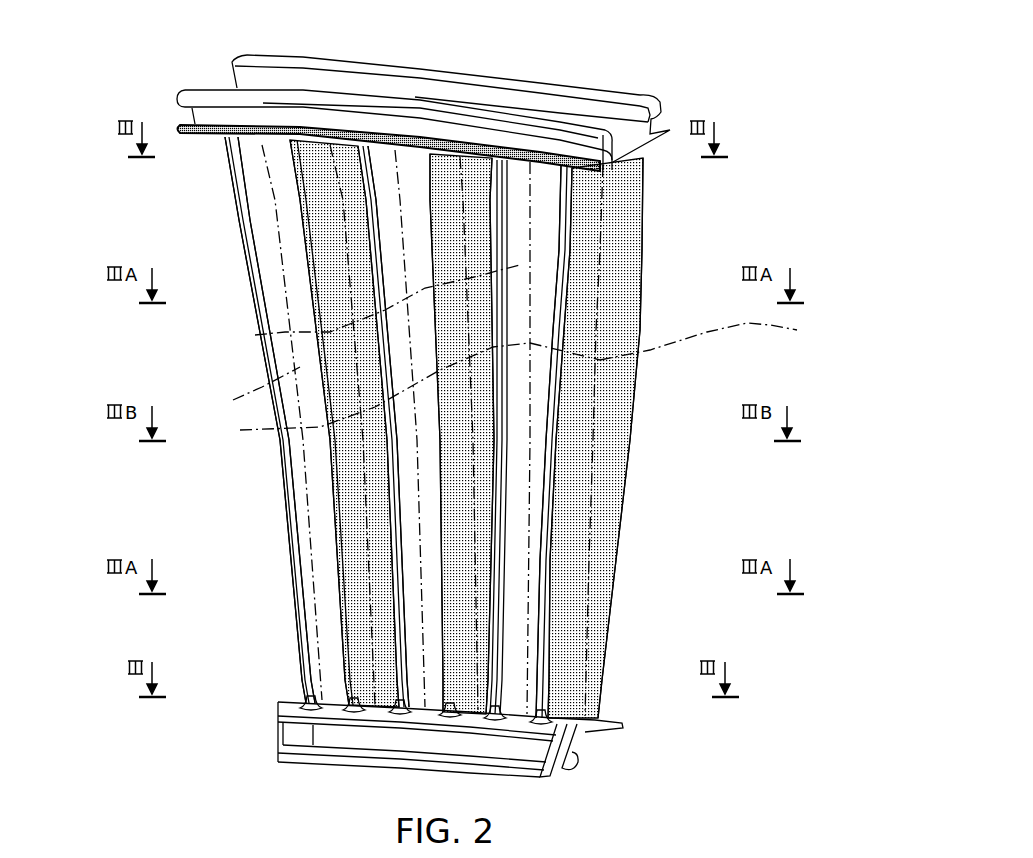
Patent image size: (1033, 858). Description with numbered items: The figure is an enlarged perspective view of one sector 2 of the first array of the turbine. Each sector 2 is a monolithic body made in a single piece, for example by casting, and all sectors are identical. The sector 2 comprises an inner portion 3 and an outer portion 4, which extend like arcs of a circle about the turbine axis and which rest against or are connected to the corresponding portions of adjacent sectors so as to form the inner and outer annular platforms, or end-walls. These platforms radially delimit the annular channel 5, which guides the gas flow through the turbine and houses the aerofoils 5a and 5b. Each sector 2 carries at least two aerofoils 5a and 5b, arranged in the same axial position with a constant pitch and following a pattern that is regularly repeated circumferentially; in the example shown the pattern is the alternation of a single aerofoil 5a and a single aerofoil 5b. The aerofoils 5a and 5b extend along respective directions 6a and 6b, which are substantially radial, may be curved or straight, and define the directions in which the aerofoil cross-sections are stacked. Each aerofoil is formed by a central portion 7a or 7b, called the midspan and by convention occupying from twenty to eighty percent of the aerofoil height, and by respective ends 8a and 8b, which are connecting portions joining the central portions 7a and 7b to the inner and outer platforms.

The sector 2 is at (486, 412).
The inner portion 3 is at (570, 760).
The outer portion 4 is at (630, 113).
The annular channel 5 is at (675, 378).
The aerofoil 5a is at (421, 458).
The aerofoil 5b is at (363, 583).
The direction 6a is at (263, 413).
The direction 6b is at (270, 317).
The central portion 7a is at (395, 437).
The central portion 7b is at (337, 500).
The end 8a is at (363, 193).
The end 8b is at (317, 145).